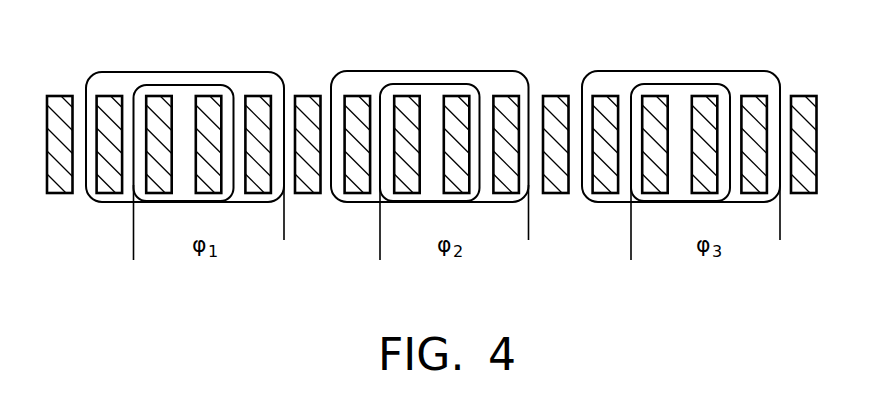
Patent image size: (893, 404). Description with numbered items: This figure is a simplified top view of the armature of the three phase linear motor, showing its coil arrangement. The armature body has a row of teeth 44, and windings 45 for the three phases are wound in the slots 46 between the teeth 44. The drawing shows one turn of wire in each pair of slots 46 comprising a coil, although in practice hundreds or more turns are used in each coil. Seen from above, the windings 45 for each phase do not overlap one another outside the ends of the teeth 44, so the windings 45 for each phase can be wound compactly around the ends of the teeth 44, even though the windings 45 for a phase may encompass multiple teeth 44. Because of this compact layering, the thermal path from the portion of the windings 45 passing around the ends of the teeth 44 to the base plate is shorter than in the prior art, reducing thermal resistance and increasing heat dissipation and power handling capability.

The teeth 44 is at (52, 95).
The windings 45 is at (429, 136).
The slots 46 is at (80, 188).